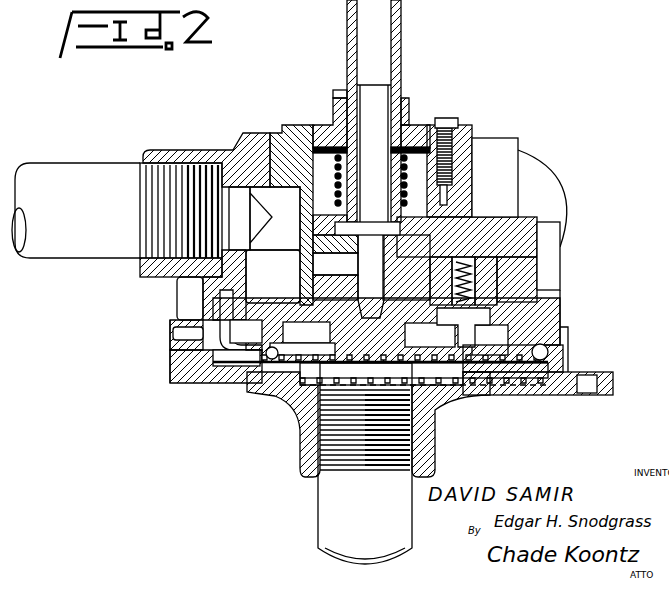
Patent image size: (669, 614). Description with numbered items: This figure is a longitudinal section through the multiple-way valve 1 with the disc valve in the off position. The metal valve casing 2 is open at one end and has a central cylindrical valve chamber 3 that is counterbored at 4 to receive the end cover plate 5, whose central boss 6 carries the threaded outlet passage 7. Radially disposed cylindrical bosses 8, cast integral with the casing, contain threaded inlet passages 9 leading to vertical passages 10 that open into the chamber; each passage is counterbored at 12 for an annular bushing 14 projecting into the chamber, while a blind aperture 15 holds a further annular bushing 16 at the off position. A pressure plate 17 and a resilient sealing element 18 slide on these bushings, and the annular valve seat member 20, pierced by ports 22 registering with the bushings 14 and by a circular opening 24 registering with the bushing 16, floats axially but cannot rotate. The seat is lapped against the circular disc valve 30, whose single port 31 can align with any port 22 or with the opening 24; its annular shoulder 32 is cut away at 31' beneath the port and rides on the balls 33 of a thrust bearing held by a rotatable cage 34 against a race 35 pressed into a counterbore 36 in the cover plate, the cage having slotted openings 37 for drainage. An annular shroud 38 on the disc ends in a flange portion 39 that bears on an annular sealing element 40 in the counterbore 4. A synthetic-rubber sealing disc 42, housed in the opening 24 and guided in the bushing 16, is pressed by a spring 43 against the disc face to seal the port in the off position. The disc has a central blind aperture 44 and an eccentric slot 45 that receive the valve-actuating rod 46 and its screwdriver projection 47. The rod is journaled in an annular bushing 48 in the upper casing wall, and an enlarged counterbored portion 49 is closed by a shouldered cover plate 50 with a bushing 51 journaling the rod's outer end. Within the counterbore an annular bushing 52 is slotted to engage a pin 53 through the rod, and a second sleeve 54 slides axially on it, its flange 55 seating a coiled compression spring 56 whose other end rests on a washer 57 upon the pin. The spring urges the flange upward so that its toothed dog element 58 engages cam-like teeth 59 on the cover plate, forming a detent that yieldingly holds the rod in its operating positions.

The multiple-way valve 1 is at (160, 322).
The valve casing 2 is at (252, 152).
The valve chamber 3 is at (200, 384).
The counterbore 4 is at (196, 332).
The end cover plate 5 is at (515, 390).
The boss 6 is at (303, 440).
The outlet passage 7 is at (425, 440).
The cylindrical bosses 8 is at (163, 160).
The inlet passages 9 is at (150, 277).
The passages 10 is at (280, 192).
The counterbore 12 is at (250, 248).
The annular bushing 14 is at (212, 286).
The blind aperture 15 is at (537, 262).
The annular bushing 16 is at (537, 282).
The pressure plate 17 is at (216, 300).
The sealing element 18 is at (537, 298).
The valve seat member 20 is at (560, 310).
The ports 22 is at (280, 332).
The circular opening 24 is at (520, 320).
The disc valve 30 is at (430, 335).
The port 31 is at (490, 340).
The cut-away 31' is at (501, 406).
The annular shoulder 32 is at (250, 345).
The balls 33 is at (445, 400).
The cage 34 is at (376, 374).
The race 35 is at (265, 372).
The counterbore 36 is at (478, 392).
The slotted openings 37 is at (424, 373).
The annular shroud 38 is at (560, 340).
The flange portion 39 is at (540, 393).
The annular sealing element 40 is at (560, 355).
The sealing disc 42 is at (400, 271).
The spring 43 is at (452, 262).
The blind aperture 44 is at (400, 352).
The slot 45 is at (453, 337).
The valve-actuating rod 46 is at (402, 68).
The screwdriver projection 47 is at (424, 375).
The annular bushing 48 is at (332, 270).
The counterbored portion 49 is at (413, 180).
The cover plate 50 is at (406, 148).
The bushing 51 is at (332, 92).
The annular bushing 52 is at (361, 186).
The pin 53 is at (328, 194).
The sleeve 54 is at (328, 170).
The flange 55 is at (333, 123).
The compression spring 56 is at (458, 124).
The washer 57 is at (400, 236).
The toothed dog element 58 is at (401, 148).
The teeth 59 is at (478, 138).